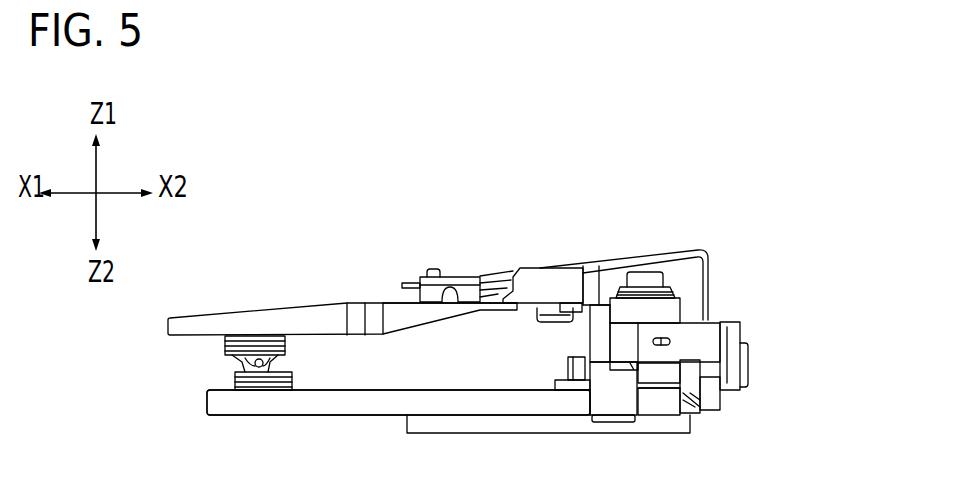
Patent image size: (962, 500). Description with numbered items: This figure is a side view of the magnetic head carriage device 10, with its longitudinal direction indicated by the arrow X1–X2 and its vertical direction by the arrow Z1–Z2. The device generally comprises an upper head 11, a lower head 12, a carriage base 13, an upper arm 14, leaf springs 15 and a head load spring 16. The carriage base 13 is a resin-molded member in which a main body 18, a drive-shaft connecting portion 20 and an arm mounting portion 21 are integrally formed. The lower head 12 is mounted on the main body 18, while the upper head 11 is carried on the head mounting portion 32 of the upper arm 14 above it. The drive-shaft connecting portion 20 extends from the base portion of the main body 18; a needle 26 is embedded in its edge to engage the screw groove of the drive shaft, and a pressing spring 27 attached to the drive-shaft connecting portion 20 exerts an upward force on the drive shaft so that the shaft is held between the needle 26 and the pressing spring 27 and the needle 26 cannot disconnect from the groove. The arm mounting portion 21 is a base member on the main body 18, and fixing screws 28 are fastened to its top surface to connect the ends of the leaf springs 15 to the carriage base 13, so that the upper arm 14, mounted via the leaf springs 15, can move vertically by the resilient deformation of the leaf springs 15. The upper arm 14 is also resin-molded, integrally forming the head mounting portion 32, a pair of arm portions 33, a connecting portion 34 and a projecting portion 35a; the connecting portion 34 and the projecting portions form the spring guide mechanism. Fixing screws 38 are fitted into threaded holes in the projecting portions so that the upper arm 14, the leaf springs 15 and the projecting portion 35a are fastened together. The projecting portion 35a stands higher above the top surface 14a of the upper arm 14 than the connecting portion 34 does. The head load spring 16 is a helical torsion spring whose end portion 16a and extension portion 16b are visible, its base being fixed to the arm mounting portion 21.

The magnetic head carriage device 10 is at (236, 138).
The upper head 11 is at (232, 364).
The lower head 12 is at (284, 365).
The carriage base 13 is at (362, 425).
The upper arm 14 is at (334, 297).
The top surface of the upper arm 14a is at (397, 293).
The leaf springs 15 is at (593, 289).
The head load spring 16 is at (704, 240).
The end portion 16a is at (413, 282).
The extension portion 16b is at (625, 258).
The main body 18 is at (305, 408).
The drive-shaft connecting portion 20 is at (697, 344).
The arm mounting portion 21 is at (673, 310).
The needle 26 is at (661, 340).
The pressing spring 27 is at (655, 395).
The fixing screws 28 is at (650, 267).
The head mounting portion 32 is at (258, 325).
The arm portions 33 is at (455, 276).
The connecting portion 34 is at (431, 262).
The projecting portion 35a is at (532, 286).
The fixing screws 38 is at (543, 322).